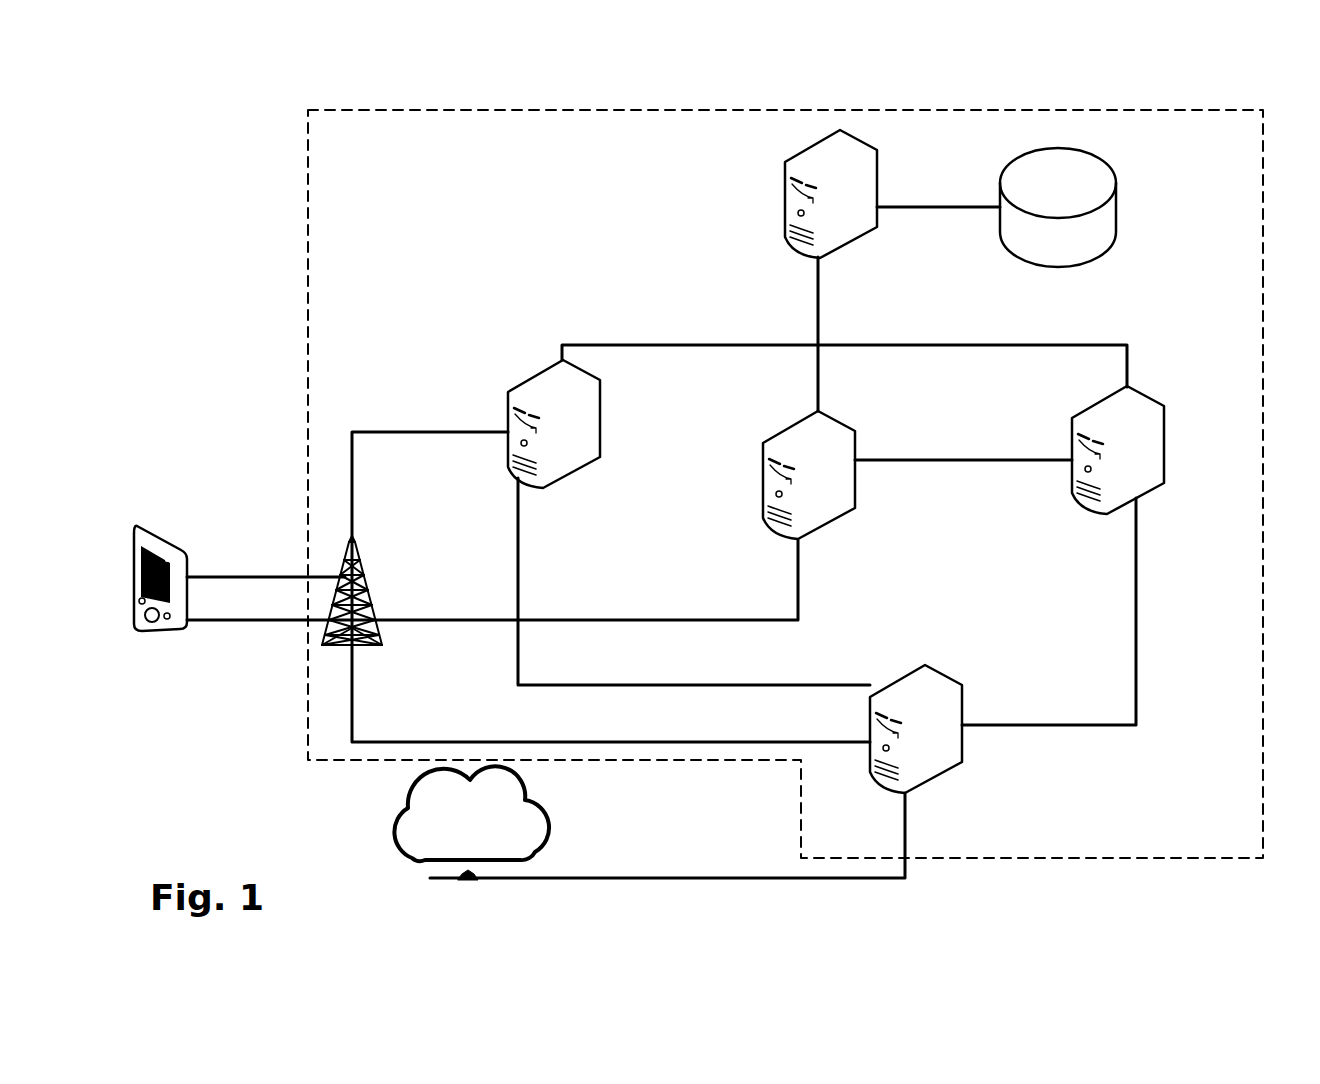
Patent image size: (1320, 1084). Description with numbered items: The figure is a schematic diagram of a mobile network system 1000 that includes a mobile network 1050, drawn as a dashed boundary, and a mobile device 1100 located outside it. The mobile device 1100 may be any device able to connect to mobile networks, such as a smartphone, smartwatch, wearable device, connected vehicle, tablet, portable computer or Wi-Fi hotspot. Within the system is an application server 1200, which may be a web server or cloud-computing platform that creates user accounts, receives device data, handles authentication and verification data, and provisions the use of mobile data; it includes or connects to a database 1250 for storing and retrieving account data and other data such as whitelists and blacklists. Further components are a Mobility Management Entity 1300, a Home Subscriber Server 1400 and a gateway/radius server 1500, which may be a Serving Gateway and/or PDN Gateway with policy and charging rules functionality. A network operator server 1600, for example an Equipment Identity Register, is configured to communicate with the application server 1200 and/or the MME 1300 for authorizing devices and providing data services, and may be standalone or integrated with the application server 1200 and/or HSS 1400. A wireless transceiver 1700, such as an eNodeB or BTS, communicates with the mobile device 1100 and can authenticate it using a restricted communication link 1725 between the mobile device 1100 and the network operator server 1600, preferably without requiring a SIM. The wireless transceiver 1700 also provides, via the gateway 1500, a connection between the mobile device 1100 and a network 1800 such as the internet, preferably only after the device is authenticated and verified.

The mobile network system 1000 is at (245, 166).
The mobile network 1050 is at (305, 288).
The mobile device 1100 is at (165, 633).
The application server 1200 is at (785, 200).
The database 1250 is at (1117, 218).
The Mobility Management Entity (MME) 1300 is at (527, 386).
The Home Subscriber Server (HSS) 1400 is at (1163, 452).
The gateway/radius server 1500 is at (945, 772).
The network operator server 1600 is at (763, 497).
The wireless transceiver 1700 is at (360, 560).
The restricted communication link 1725 is at (268, 577).
The network 1800 is at (400, 808).